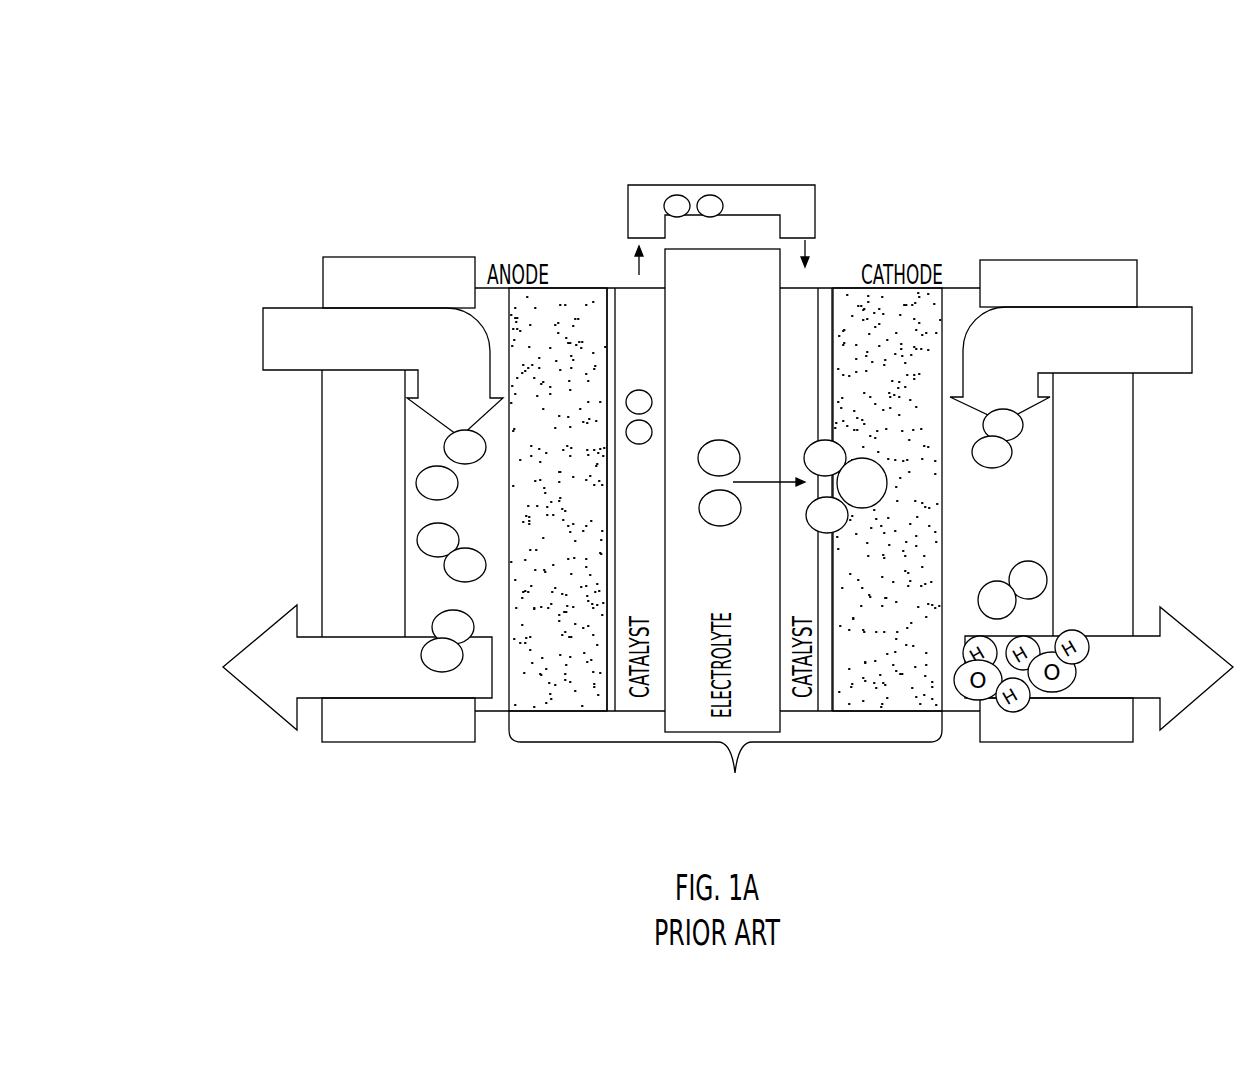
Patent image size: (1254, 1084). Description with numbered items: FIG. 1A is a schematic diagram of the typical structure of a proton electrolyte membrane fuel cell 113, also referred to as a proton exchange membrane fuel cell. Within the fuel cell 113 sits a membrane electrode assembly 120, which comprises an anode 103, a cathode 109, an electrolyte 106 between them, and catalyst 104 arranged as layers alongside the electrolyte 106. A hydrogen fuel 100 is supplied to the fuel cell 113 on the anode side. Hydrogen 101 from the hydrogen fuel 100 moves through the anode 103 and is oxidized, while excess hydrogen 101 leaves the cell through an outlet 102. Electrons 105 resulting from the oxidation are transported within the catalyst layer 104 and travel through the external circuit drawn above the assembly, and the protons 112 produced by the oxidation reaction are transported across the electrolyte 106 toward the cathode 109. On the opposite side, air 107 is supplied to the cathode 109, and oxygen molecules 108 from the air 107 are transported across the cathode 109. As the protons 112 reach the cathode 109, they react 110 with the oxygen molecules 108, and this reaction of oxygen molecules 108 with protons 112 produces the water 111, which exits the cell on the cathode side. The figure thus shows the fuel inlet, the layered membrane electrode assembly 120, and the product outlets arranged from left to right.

The hydrogen fuel 100 is at (278, 318).
The hydrogen 101 is at (430, 670).
The outlet 102 is at (287, 685).
The anode 103 is at (567, 310).
The catalyst layer 104 is at (618, 687).
The electrons 105 is at (648, 392).
The electrolyte 106 is at (750, 687).
The air 107 is at (1153, 315).
The oxygen molecules 108 is at (1012, 453).
The cathode 109 is at (930, 307).
The reaction 110 is at (857, 460).
The water 111 is at (1175, 682).
The protons 112 is at (725, 523).
The proton electrolyte membrane fuel cell 113 is at (756, 96).
The membrane electrode assembly 120 is at (697, 853).